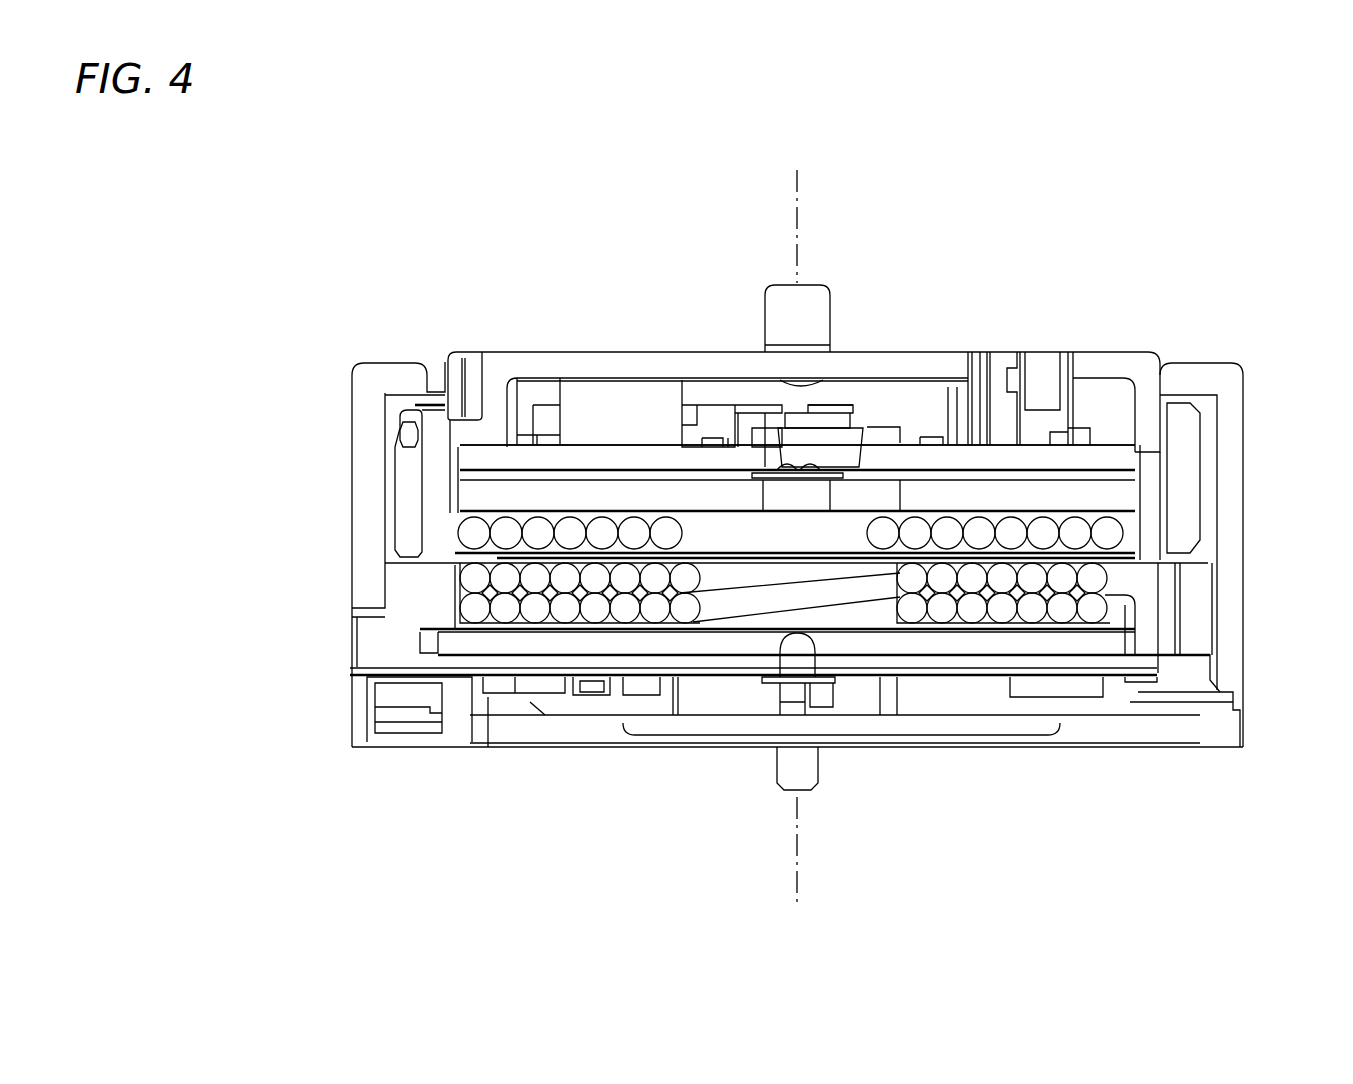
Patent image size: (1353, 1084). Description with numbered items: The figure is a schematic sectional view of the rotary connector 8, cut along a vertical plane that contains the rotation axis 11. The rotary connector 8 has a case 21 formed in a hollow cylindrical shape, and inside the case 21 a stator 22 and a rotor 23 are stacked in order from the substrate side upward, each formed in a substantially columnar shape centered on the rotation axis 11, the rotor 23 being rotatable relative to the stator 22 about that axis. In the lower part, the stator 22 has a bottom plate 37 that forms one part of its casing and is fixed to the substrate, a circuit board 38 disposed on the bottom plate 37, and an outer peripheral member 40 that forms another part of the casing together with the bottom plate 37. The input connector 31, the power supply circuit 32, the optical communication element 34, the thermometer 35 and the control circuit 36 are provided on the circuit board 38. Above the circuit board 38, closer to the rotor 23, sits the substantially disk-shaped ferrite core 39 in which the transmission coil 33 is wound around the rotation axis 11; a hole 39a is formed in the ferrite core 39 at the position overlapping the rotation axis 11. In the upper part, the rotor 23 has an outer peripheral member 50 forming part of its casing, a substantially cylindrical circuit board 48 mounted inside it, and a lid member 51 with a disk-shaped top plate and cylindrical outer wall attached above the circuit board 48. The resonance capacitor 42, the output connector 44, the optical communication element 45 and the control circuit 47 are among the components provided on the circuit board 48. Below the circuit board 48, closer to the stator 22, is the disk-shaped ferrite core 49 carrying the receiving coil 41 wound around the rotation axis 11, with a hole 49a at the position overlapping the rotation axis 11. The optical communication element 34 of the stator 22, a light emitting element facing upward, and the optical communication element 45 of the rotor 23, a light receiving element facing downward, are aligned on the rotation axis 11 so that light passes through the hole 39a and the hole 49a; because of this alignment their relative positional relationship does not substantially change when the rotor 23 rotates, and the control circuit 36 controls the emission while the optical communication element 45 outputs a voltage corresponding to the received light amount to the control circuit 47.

The rotary connector 8 is at (1280, 868).
The rotation axis 11 is at (797, 208).
The case 21 is at (392, 375).
The stator 22 is at (292, 565).
The rotor 23 is at (292, 360).
The input connector 31 is at (408, 718).
The power supply circuit 32 is at (795, 790).
The transmission coil 33 is at (1117, 605).
The optical communication element 34 is at (812, 677).
The thermometer 35 is at (1003, 593).
The control circuit 36 is at (790, 597).
The bottom plate 37 is at (568, 737).
The circuit board 38 is at (1173, 660).
The ferrite core 39 is at (1095, 642).
The hole 39a is at (770, 643).
The outer peripheral member 40 is at (1200, 597).
The receiving coil 41 is at (1127, 533).
The resonance capacitor 42 is at (958, 340).
The output connector 44 is at (1056, 352).
The optical communication element 45 is at (815, 432).
The control circuit 47 is at (797, 475).
The circuit board 48 is at (1117, 462).
The ferrite core 49 is at (1117, 497).
The hole 49a is at (792, 497).
The outer peripheral member 50 is at (403, 493).
The lid member 51 is at (1130, 365).